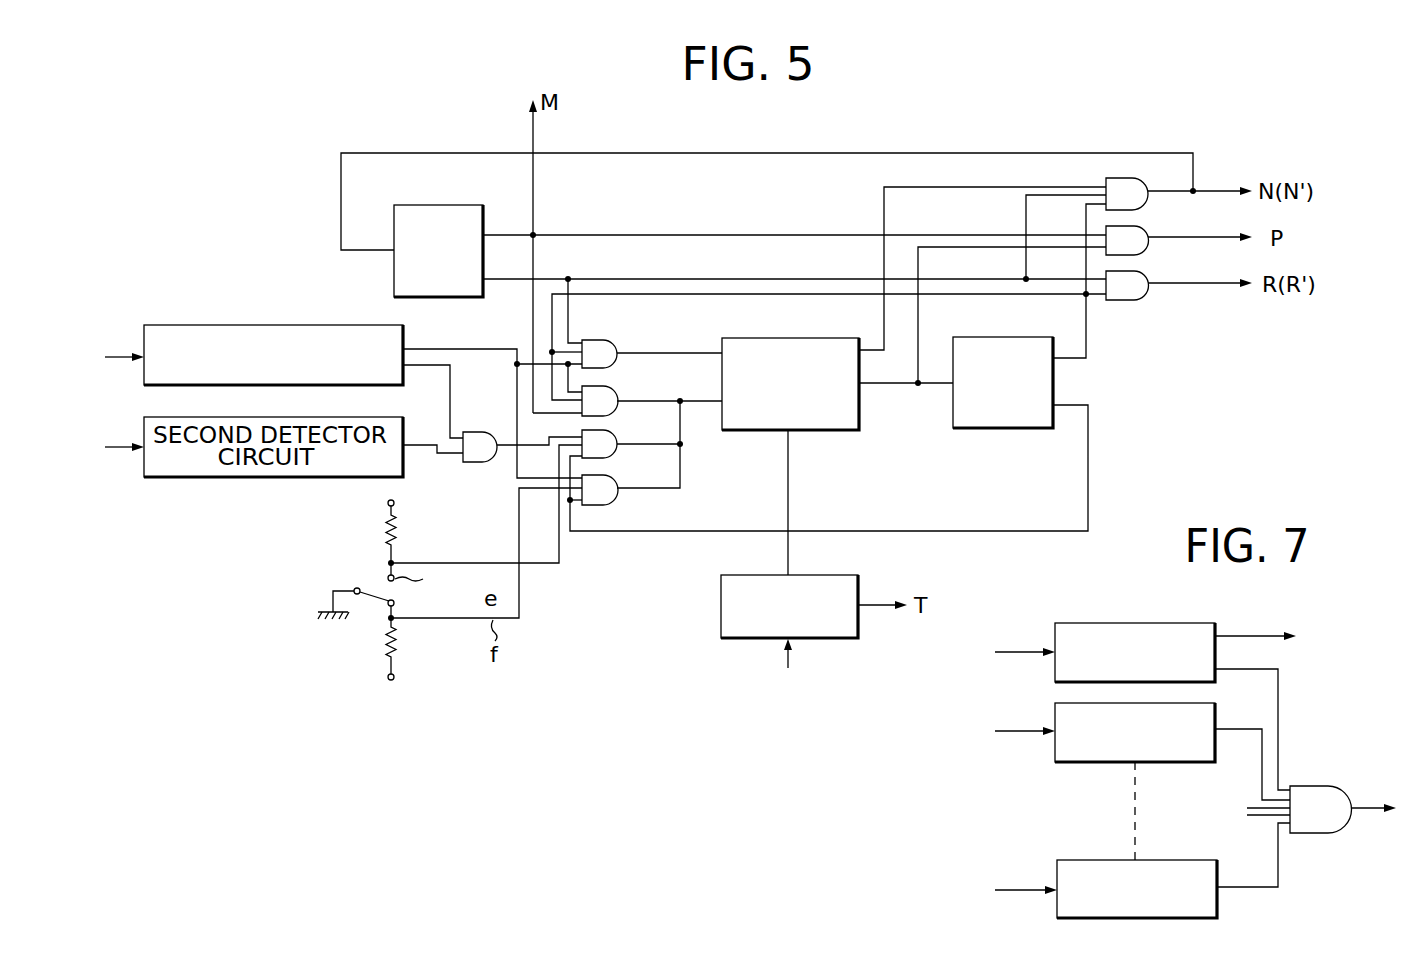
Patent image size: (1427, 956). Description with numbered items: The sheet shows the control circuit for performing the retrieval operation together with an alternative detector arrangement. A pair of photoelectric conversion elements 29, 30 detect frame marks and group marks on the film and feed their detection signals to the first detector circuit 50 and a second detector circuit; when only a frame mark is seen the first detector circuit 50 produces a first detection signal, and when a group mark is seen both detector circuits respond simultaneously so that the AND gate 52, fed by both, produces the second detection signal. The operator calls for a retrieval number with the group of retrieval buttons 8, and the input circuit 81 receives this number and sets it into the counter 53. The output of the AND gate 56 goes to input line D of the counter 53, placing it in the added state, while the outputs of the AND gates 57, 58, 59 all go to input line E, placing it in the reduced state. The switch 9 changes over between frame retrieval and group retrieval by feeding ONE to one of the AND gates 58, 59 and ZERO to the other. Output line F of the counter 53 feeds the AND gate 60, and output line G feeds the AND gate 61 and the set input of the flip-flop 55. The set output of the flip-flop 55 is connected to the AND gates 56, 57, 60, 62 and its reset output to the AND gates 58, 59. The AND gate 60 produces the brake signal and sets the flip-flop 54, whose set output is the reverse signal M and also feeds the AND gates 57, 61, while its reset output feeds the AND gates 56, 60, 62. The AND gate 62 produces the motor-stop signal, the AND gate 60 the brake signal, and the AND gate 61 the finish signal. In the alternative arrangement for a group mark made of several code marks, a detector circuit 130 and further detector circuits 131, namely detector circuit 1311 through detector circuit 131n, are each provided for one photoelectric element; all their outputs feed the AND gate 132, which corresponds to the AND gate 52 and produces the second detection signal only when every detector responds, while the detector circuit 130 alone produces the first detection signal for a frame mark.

In FIG. 5, the group of retrieval buttons 8 is at (788, 663).
In FIG. 5, the switch 9 is at (376, 587).
In FIG. 5, the photoelectric conversion element 29 is at (108, 357).
In FIG. 5, the photoelectric conversion element 30 is at (108, 447).
In FIG. 5, the first detector circuit 50 is at (274, 325).
In FIG. 5, the AND gate 52 is at (479, 432).
In FIG. 5, the counter 53 is at (774, 338).
In FIG. 5, the flip-flop circuit 54 is at (437, 205).
In FIG. 5, the flip-flop circuit 55 is at (953, 420).
In FIG. 5, the AND gate 56 is at (615, 344).
In FIG. 5, the AND gate 57 is at (620, 394).
In FIG. 5, the AND gate 58 is at (620, 438).
In FIG. 5, the AND gate 59 is at (620, 485).
In FIG. 5, the AND gate 60 is at (1137, 181).
In FIG. 5, the AND gate 61 is at (1143, 227).
In FIG. 5, the AND gate 62 is at (1148, 273).
In FIG. 5, the input circuit 81 is at (721, 606).
In FIG. 7, the detector circuit 130 is at (1145, 623).
In FIG. 7, the detector circuits 131 is at (1137, 810).
In FIG. 7, the detector circuit 1311 is at (1055, 745).
In FIG. 7, the detector circuit 131n is at (1057, 873).
In FIG. 7, the AND gate 132 is at (1321, 786).